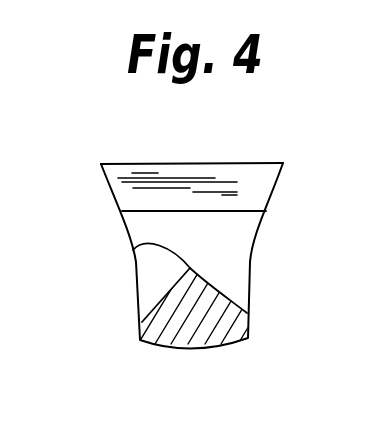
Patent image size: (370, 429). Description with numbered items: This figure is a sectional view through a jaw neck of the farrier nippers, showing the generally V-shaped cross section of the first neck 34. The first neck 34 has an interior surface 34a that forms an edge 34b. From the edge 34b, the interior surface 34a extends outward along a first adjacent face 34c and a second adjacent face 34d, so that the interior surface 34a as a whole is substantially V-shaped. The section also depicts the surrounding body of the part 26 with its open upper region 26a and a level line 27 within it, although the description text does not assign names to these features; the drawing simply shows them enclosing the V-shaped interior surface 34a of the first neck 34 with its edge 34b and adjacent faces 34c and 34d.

The container 26 is at (277, 189).
The open top of container 26a is at (132, 164).
The liquid 27 is at (240, 211).
The first neck 34 is at (210, 355).
The interior surface 34a is at (209, 261).
The edge 34b is at (133, 250).
The first adjacent face 34c is at (220, 292).
The second adjacent face 34d is at (167, 293).